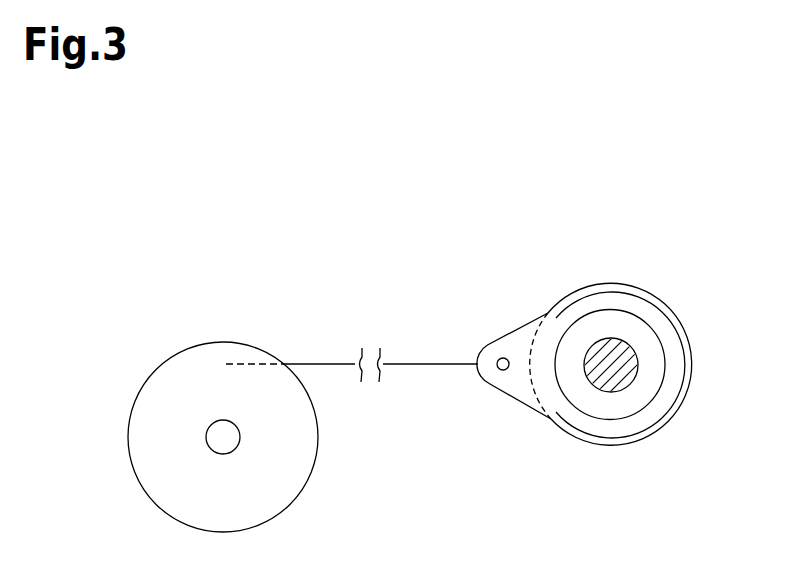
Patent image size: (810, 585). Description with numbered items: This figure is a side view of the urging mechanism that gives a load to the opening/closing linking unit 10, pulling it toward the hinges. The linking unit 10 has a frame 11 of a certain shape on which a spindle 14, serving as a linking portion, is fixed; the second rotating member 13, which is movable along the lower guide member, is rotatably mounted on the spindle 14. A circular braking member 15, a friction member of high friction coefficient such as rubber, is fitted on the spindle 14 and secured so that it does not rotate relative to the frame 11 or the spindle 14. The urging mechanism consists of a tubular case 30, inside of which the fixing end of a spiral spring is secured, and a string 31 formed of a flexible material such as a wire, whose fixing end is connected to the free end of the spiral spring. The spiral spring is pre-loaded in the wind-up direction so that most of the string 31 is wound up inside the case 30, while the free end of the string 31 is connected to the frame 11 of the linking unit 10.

The opening/closing linking unit 10 is at (541, 226).
The frame 11 is at (512, 347).
The second rotating member 13 is at (675, 312).
The spindle 14 is at (613, 377).
The braking member 15 is at (650, 347).
The case 30 is at (302, 455).
The string 31 is at (322, 364).